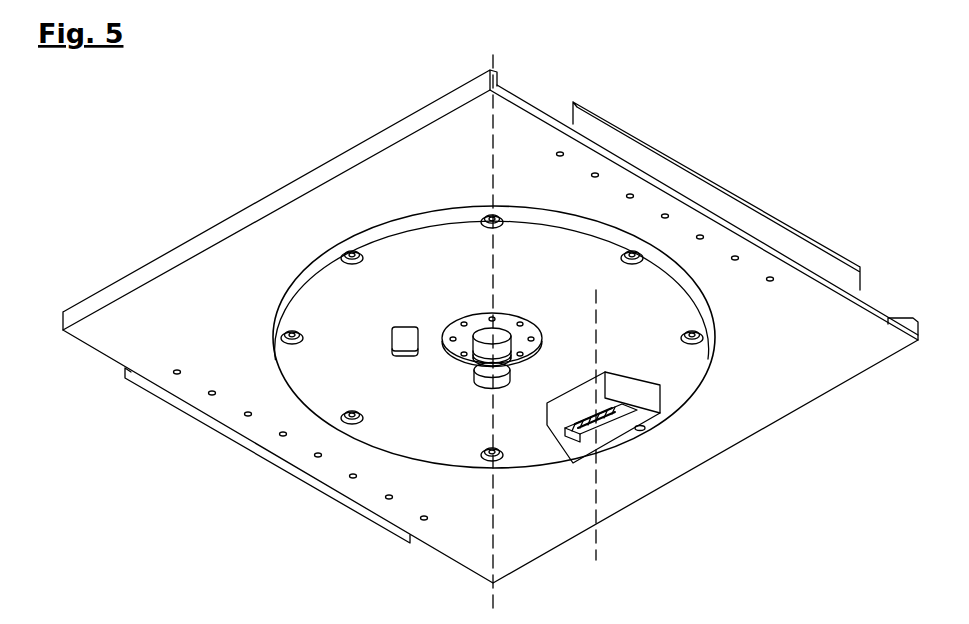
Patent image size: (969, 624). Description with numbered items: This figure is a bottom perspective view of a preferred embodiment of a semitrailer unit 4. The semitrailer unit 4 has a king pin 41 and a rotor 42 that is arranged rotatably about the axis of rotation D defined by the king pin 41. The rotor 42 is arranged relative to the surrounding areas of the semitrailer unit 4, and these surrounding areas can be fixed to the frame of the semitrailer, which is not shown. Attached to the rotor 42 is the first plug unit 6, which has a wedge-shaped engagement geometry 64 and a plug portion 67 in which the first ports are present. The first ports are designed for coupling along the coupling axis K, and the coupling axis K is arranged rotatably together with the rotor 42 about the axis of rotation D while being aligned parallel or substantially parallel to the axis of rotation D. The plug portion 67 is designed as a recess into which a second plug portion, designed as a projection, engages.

The semitrailer unit 4 is at (769, 196).
The king pin 41 is at (478, 348).
The rotor 42 is at (563, 243).
The first plug unit 6 is at (680, 403).
The wedge-shaped engagement geometry 64 is at (632, 390).
The plug portion 67 is at (608, 427).
The axis of rotation D is at (498, 505).
The coupling axis K is at (598, 470).